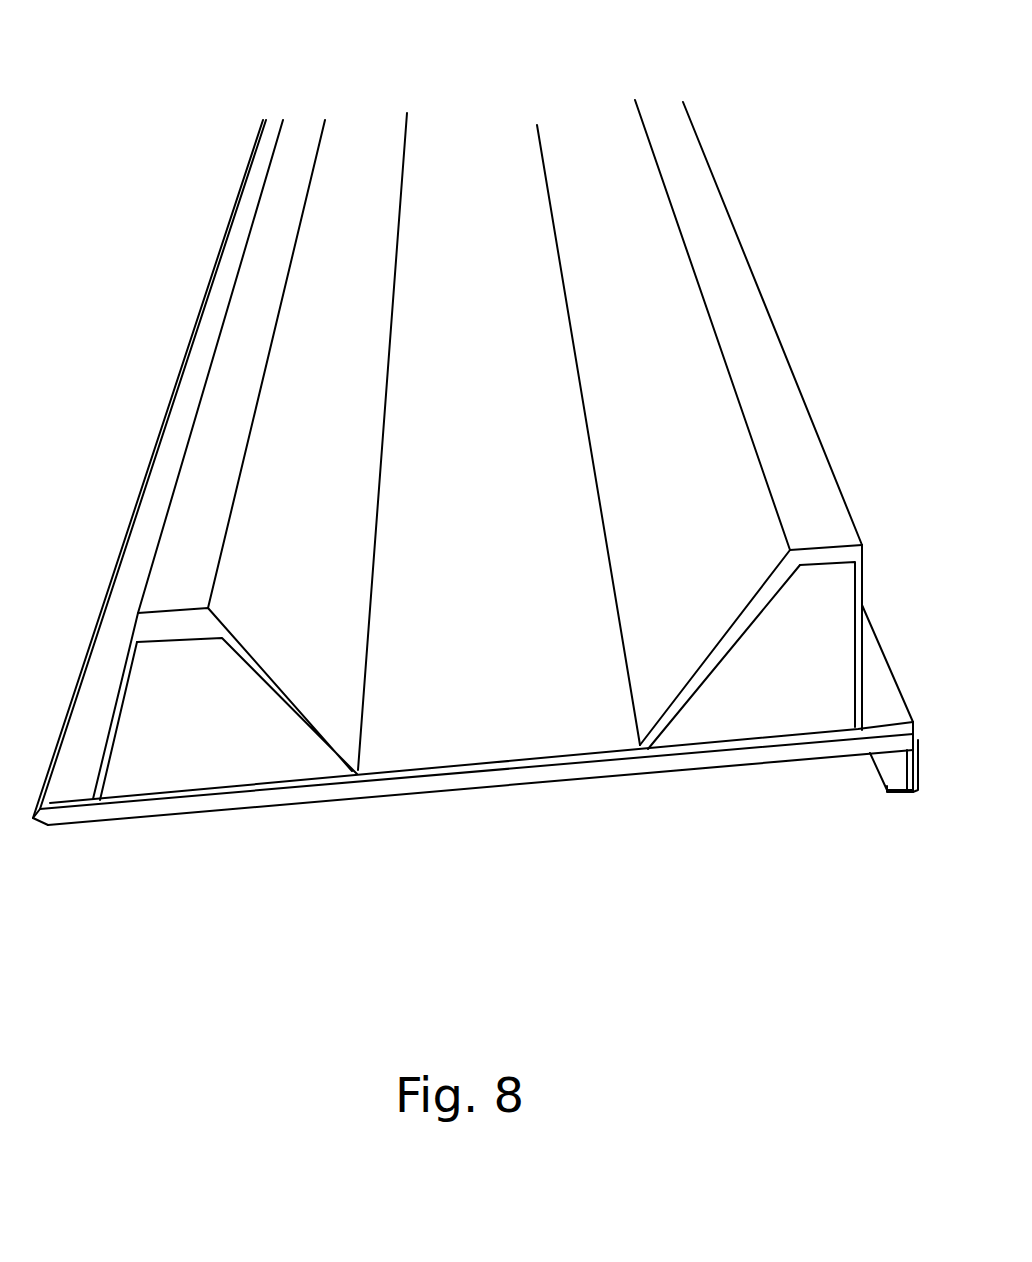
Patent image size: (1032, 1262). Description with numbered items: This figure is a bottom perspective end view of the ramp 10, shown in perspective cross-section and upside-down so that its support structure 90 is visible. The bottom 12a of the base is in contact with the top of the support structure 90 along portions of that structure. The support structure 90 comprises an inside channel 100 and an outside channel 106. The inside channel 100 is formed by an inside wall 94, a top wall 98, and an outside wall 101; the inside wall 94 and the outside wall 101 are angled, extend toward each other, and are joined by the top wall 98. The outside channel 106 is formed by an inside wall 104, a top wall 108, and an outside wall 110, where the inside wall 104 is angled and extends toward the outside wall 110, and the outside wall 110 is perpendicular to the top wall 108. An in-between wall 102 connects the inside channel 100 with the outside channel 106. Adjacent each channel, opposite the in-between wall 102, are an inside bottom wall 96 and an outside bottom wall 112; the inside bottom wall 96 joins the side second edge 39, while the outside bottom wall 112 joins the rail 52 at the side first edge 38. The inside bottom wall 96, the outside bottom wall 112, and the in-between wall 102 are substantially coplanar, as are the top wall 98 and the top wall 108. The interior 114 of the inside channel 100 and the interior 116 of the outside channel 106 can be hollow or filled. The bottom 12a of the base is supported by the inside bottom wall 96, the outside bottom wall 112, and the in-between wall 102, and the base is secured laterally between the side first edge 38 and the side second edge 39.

The ramp 10 is at (180, 1075).
The bottom of the base 12a is at (215, 765).
The side first edge 38 is at (917, 747).
The side second edge 39 is at (68, 713).
The rail 52 is at (897, 800).
The support structure 90 is at (118, 122).
The inside wall 94 is at (128, 650).
The inside bottom wall 96 is at (150, 520).
The top wall 98 is at (190, 456).
The inside channel 100 is at (228, 382).
The outside wall 101 is at (330, 446).
The in-between wall 102 is at (425, 722).
The inside wall 104 is at (645, 518).
The outside channel 106 is at (760, 325).
The top wall 108 is at (780, 415).
The outside wall 110 is at (862, 580).
The outside bottom wall 112 is at (880, 681).
The interior 114 is at (215, 712).
The interior 116 is at (770, 665).